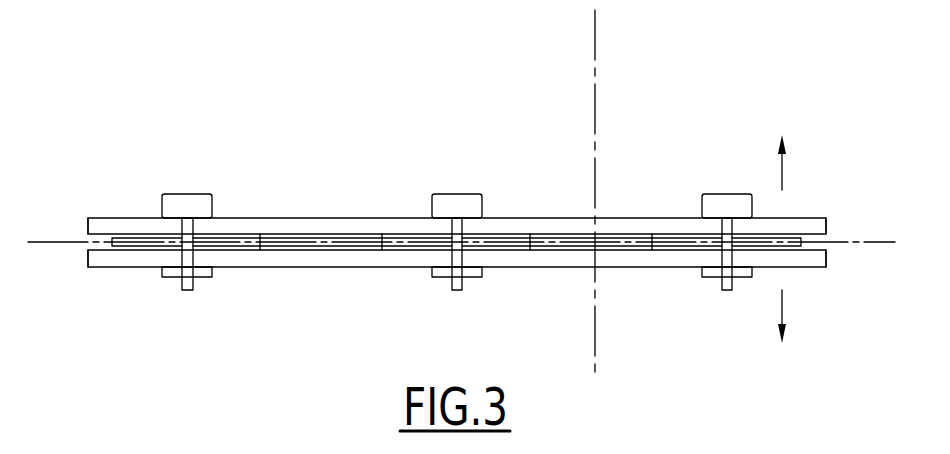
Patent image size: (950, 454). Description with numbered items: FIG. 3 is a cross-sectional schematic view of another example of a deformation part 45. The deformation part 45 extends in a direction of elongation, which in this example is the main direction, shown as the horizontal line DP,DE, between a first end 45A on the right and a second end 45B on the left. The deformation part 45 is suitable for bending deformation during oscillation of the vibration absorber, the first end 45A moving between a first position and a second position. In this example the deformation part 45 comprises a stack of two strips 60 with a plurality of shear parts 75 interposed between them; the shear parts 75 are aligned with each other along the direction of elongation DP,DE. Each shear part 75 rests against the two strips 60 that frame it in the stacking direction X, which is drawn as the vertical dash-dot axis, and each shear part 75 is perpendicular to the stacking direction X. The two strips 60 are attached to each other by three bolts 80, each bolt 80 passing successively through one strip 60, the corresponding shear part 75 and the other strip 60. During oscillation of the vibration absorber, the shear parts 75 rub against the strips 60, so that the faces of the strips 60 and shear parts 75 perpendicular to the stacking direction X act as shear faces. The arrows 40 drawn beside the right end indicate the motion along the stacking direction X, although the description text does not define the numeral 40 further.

The deformation part 45 is at (227, 100).
The first end 45A is at (857, 288).
The second end 45B is at (55, 190).
The strips 60 is at (278, 226).
The shear part 75 is at (410, 246).
The bolts 80 is at (451, 200).
The direction of movement 40 is at (794, 239).
The stacking direction X is at (583, 190).
The main direction and direction of elongation DP,DE is at (44, 246).